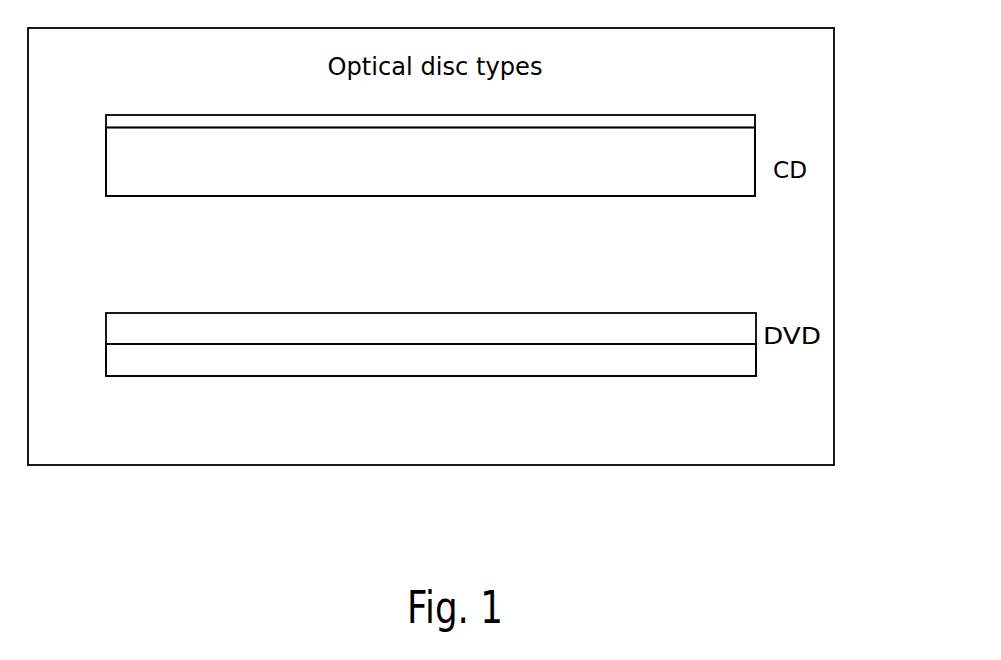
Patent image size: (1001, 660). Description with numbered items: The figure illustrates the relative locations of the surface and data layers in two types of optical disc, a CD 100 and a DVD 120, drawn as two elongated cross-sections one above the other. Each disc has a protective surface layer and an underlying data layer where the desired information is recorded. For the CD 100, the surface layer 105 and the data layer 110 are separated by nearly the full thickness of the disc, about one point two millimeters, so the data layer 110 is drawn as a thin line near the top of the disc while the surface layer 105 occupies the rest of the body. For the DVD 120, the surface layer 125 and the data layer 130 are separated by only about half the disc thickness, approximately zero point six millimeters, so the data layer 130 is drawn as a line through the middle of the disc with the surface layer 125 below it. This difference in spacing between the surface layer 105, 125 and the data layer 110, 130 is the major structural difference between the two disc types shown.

The CD 100 is at (508, 164).
The surface layer 105 is at (769, 127).
The data layer 110 is at (232, 127).
The DVD 120 is at (509, 344).
The surface layer 125 is at (431, 379).
The data layer 130 is at (352, 344).